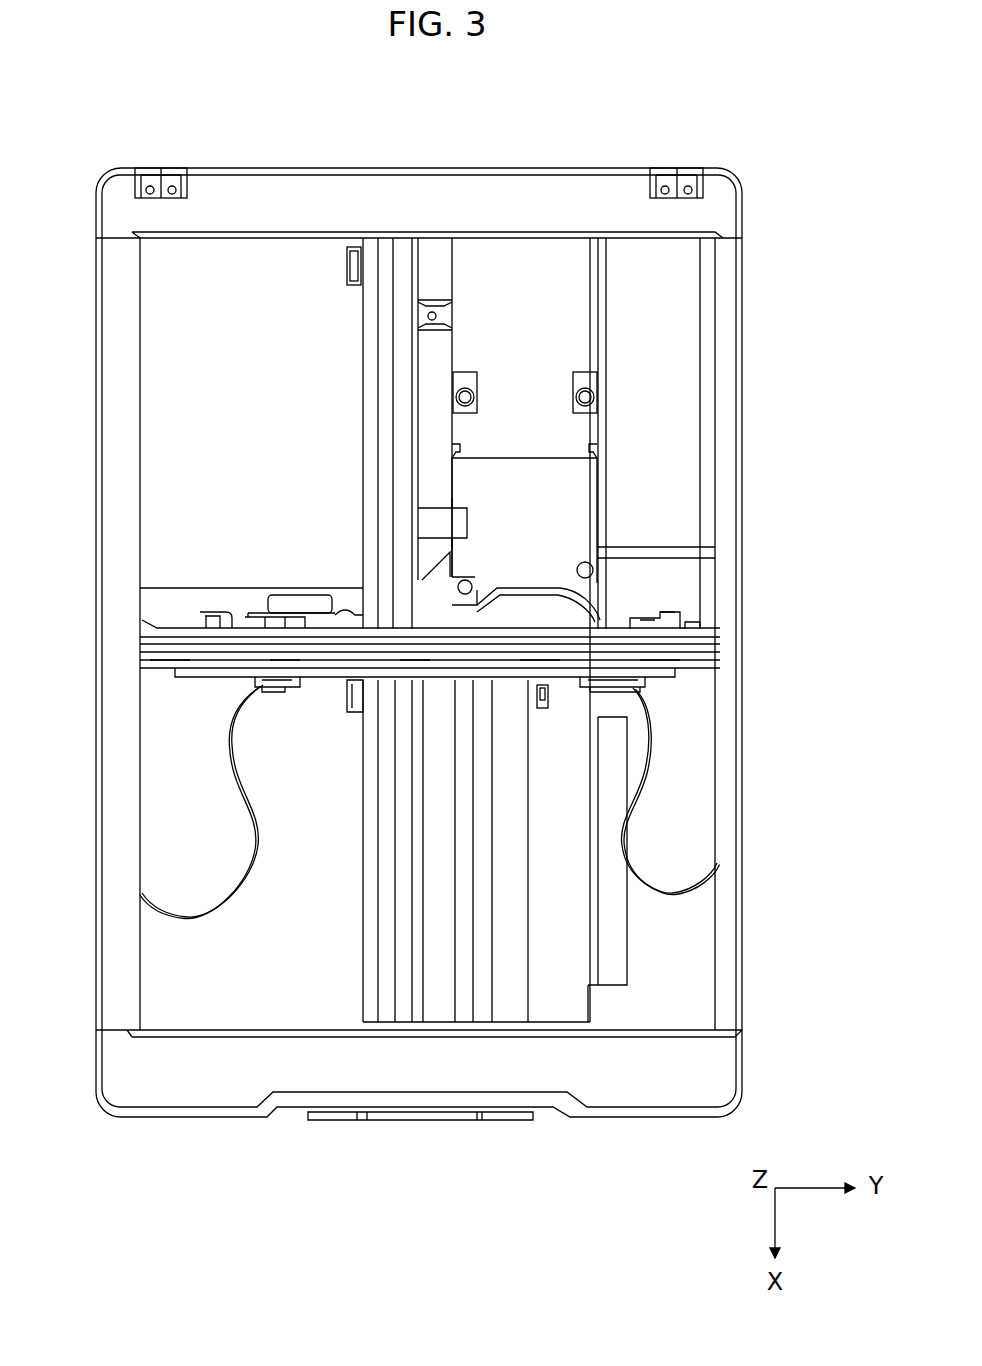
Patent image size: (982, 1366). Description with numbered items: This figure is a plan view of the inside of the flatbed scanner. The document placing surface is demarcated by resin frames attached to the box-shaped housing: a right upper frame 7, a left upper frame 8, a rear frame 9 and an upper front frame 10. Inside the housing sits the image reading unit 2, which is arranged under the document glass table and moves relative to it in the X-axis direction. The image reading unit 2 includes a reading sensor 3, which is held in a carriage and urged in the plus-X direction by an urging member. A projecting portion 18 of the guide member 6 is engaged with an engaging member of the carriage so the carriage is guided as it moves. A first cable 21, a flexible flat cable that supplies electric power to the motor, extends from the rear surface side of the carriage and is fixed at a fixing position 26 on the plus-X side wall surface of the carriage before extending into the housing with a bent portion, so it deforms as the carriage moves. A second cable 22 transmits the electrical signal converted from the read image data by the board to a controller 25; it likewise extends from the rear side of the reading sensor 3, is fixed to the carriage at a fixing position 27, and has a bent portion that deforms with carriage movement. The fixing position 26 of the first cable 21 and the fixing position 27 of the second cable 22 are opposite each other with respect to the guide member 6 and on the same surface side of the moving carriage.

The image reading unit 2 is at (173, 611).
The reading sensor 3 is at (660, 648).
The guide member 6 is at (362, 333).
The right upper frame 7 is at (728, 805).
The left upper frame 8 is at (127, 781).
The rear frame 9 is at (575, 193).
The upper front frame 10 is at (218, 1090).
The projecting portion 18 is at (386, 247).
The first cable 21 is at (670, 893).
The second cable 22 is at (190, 920).
The controller 25 is at (583, 432).
The fixing position of the first cable 26 is at (624, 701).
The fixing position of the second cable 27 is at (295, 698).